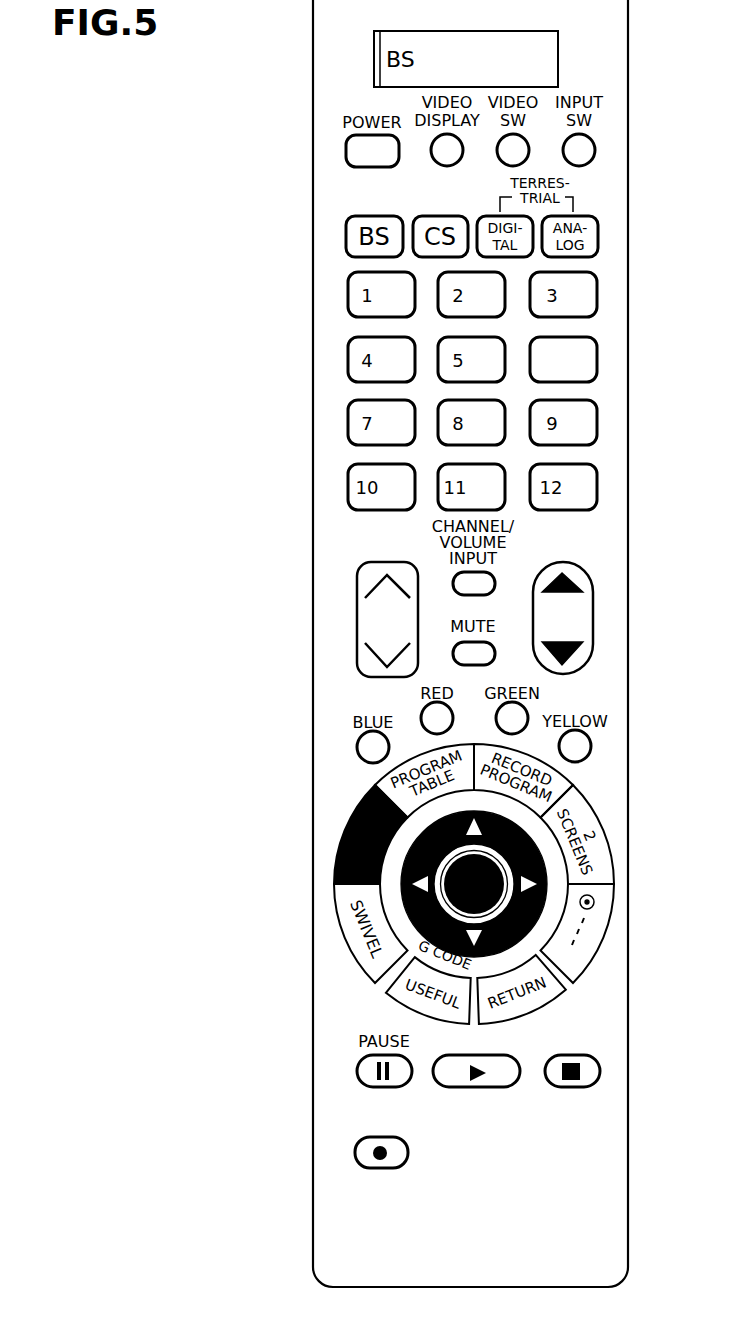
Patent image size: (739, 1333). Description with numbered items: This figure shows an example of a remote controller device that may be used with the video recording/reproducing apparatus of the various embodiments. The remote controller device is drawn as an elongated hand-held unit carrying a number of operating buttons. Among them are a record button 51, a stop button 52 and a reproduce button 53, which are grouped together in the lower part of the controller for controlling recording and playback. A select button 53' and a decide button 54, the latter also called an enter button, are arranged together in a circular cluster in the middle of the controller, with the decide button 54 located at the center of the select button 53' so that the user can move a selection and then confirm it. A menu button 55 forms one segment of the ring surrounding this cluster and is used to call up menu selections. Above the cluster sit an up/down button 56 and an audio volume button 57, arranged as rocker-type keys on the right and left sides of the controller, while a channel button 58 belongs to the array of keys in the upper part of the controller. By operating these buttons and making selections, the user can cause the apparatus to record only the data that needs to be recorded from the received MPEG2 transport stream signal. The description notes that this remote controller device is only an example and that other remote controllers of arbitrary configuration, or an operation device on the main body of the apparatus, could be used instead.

The record button 51 is at (373, 1163).
The stop button 52 is at (580, 1060).
The reproduce button 53 is at (556, 1091).
The select button 53' is at (402, 884).
The decide button 54 is at (496, 868).
The menu button 55 is at (363, 797).
The up/down button 56 is at (587, 598).
The audio volume button 57 is at (367, 646).
The channel button 58 is at (567, 353).